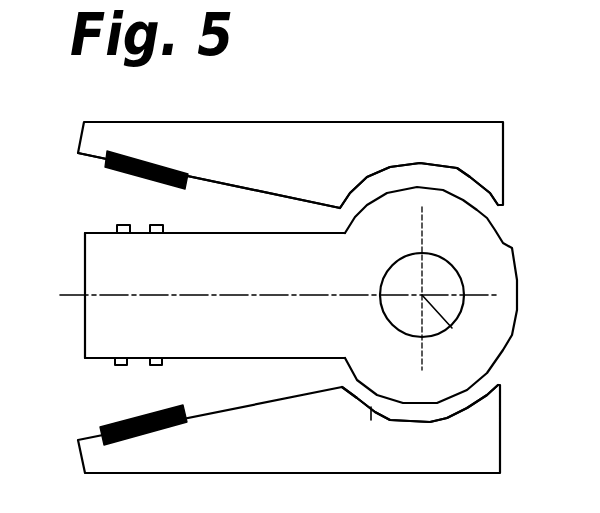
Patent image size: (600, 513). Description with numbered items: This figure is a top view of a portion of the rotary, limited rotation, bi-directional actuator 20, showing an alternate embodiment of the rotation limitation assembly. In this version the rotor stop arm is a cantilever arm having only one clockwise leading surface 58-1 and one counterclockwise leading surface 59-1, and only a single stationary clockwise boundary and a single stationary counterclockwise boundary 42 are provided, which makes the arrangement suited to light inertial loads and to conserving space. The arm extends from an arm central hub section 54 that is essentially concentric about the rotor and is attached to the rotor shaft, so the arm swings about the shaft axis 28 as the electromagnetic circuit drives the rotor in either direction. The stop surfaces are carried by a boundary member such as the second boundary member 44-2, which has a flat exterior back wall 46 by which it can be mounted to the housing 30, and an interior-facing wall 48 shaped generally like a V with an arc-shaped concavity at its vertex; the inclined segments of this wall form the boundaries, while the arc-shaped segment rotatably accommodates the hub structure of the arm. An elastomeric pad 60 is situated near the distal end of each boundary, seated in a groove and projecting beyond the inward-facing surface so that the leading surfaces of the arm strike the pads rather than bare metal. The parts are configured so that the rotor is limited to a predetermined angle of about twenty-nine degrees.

The back wall 46 is at (178, 122).
The second boundary member 44-2 is at (367, 143).
The stationary counterclockwise boundary 42 is at (280, 400).
The interior-facing wall 48 is at (423, 177).
The elastomeric pad 60 is at (107, 162).
The housing 30 is at (122, 226).
The clockwise leading surface 58-1 is at (207, 237).
The counterclockwise leading surface 59-1 is at (183, 360).
The arm central hub section 54 is at (500, 272).
The actuator 20 is at (390, 267).
The shaft axis 28 is at (455, 322).